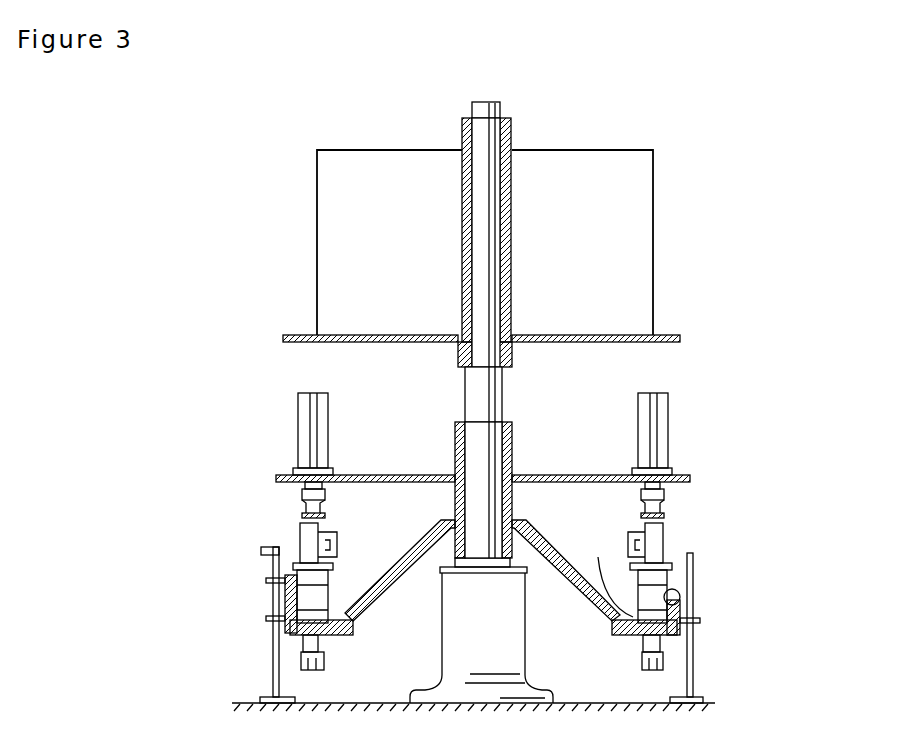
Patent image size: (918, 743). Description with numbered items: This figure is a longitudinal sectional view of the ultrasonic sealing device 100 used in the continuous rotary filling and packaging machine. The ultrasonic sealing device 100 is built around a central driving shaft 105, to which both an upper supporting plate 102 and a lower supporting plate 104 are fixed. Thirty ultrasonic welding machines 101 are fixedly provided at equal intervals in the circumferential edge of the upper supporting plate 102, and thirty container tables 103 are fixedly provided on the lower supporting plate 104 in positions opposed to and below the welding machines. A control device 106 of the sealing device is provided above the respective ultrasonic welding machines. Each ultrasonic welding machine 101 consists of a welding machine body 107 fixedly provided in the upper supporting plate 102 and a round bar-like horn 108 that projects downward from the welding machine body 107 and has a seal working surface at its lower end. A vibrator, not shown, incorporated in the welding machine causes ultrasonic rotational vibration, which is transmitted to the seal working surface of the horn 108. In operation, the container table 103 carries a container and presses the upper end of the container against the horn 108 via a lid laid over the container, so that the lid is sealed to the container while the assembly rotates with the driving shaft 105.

The ultrasonic sealing device 100 is at (131, 92).
The ultrasonic welding machine 101 is at (232, 393).
The upper supporting plate 102 is at (683, 477).
The container table 103 is at (667, 577).
The lower supporting plate 104 is at (680, 617).
The driving shaft 105 is at (497, 172).
The control device 106 is at (653, 218).
The welding machine body 107 is at (672, 402).
The horn 108 is at (667, 515).